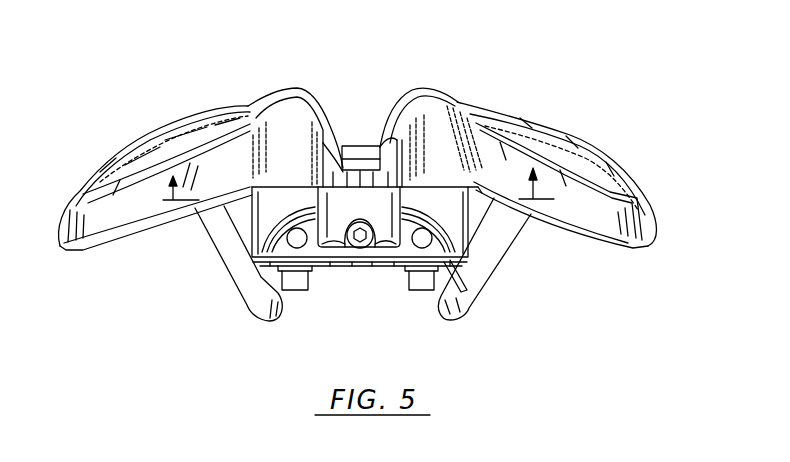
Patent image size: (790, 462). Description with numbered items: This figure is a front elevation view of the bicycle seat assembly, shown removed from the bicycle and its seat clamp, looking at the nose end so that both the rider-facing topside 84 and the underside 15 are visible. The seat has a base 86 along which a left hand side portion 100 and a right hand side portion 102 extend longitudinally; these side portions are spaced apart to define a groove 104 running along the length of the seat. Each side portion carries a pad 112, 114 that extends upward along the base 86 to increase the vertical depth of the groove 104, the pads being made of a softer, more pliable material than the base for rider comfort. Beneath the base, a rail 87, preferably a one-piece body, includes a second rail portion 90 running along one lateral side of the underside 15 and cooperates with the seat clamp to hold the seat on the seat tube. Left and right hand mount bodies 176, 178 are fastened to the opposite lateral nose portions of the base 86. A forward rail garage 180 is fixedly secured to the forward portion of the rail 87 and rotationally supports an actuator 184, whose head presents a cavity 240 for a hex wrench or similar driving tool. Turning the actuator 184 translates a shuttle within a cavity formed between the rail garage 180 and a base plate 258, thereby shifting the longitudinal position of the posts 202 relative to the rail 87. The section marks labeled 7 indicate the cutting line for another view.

The underside 15 is at (500, 288).
The topside 84 is at (355, 76).
The base 86 is at (612, 247).
The rail 87 is at (460, 306).
The second rail portion 90 is at (220, 254).
The left hand side portion 100 is at (644, 68).
The right hand side portion 102 is at (184, 60).
The groove 104 is at (363, 124).
The pad 112 is at (598, 162).
The pad 114 is at (121, 162).
The left hand mount body 176 is at (483, 236).
The right hand mount body 178 is at (252, 228).
The rail garage 180 is at (388, 256).
The actuator 184 is at (363, 214).
The posts 202 is at (301, 292).
The cavity 240 is at (356, 249).
The base plate 258 is at (381, 262).
The section line 7 is at (350, 186).